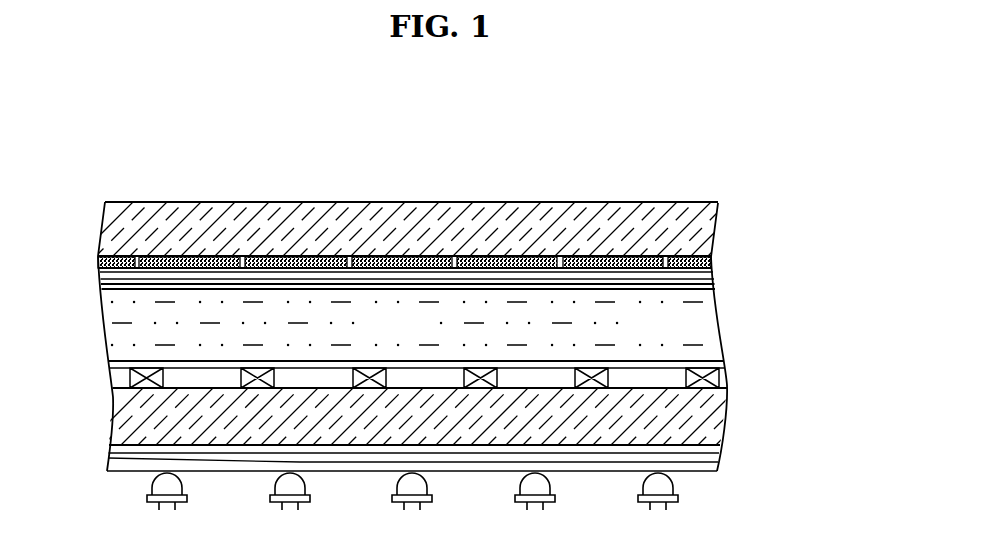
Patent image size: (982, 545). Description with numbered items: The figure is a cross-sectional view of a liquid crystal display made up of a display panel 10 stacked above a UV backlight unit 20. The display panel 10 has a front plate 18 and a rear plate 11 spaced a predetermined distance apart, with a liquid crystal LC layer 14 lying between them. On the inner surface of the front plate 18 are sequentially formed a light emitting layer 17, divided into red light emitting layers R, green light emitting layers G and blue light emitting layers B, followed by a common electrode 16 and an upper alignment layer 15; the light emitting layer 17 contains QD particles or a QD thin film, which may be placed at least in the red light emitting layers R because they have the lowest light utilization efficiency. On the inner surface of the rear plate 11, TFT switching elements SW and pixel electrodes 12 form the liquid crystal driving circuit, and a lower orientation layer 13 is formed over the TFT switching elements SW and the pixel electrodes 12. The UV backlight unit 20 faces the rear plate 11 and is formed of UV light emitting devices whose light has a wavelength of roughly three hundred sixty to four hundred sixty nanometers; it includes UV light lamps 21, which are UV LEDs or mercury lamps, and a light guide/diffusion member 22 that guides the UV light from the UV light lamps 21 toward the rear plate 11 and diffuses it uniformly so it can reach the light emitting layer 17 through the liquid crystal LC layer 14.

The display panel 10 is at (447, 281).
The rear plate 11 is at (438, 417).
The pixel electrodes 12 is at (740, 385).
The lower orientation layer 13 is at (726, 366).
The liquid crystal layer 14 is at (452, 323).
The upper alignment layer 15 is at (712, 291).
The common electrode 16 is at (712, 278).
The light emitting layer 17 is at (93, 138).
The front plate 18 is at (703, 223).
The UV backlight unit 20 is at (475, 490).
The UV light lamps 21 is at (469, 498).
The light guide/diffusion member 22 is at (710, 465).
The TFT switching elements SW is at (133, 377).
The liquid crystal LC is at (376, 323).
The blue light emitting layers B is at (123, 257).
The red light emitting layers R is at (193, 257).
The green light emitting layers G is at (303, 257).